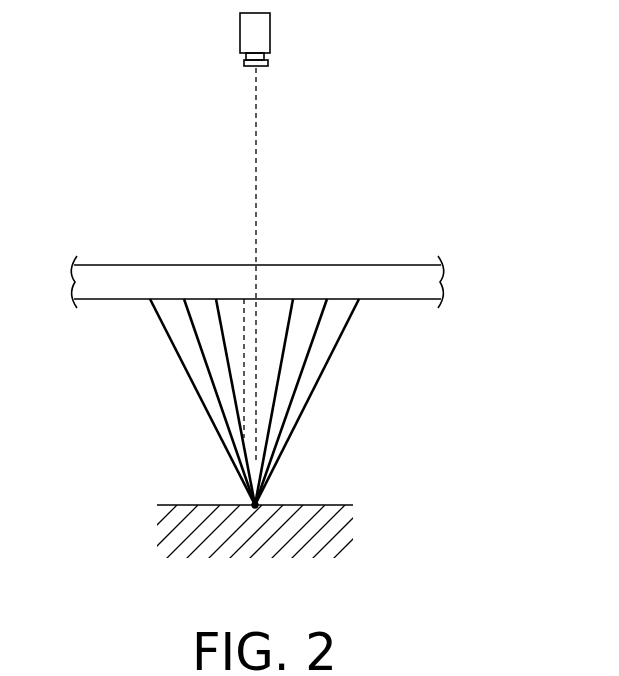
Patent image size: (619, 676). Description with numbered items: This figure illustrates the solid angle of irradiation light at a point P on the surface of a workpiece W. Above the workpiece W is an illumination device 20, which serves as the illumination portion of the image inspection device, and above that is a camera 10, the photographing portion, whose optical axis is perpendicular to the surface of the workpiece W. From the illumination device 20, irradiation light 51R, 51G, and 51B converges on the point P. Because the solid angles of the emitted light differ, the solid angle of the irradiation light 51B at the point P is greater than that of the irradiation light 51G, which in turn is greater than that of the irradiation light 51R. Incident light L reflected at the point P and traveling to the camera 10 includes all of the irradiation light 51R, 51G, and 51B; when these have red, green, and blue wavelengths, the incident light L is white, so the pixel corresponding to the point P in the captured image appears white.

The camera 10 is at (262, 33).
The incident light L is at (258, 138).
The illumination device 20 is at (402, 278).
The irradiation light 51B is at (167, 335).
The irradiation light 51G is at (200, 360).
The irradiation light 51R is at (232, 382).
The workpiece W is at (185, 507).
The point P is at (260, 503).